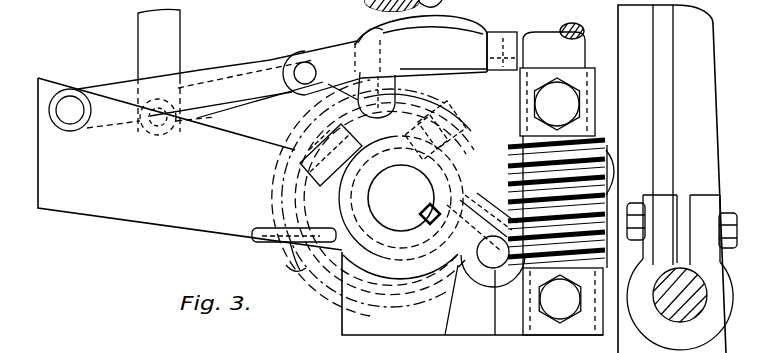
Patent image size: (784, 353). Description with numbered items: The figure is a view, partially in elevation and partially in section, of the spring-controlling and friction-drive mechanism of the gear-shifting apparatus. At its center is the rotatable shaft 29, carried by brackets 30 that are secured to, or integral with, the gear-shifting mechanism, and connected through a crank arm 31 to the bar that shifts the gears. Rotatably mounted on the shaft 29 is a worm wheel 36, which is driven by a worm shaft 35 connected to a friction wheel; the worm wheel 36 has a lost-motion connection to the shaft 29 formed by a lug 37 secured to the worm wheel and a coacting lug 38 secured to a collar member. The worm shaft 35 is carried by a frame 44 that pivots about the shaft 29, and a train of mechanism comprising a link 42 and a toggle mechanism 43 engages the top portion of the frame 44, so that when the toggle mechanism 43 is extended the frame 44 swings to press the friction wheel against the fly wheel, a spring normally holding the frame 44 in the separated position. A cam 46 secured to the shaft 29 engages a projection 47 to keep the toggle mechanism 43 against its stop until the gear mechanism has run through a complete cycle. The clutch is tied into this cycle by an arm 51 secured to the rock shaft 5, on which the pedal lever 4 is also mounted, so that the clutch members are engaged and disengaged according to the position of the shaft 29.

The pedal lever 4 is at (703, 78).
The rock shaft 5 is at (692, 298).
The rotatable shaft 29 is at (432, 211).
The brackets 30 is at (150, 207).
The crank arm 31 is at (449, 327).
The worm shaft 35 is at (556, 43).
The worm wheel 36 is at (597, 135).
The lug 37 is at (480, 100).
The coacting lug 38 is at (430, 141).
The link 42 is at (172, 33).
The toggle mechanism 43 is at (263, 68).
The frame 44 is at (485, 322).
The cam 46 is at (390, 125).
The projection 47 is at (297, 113).
The arm 51 is at (458, 25).